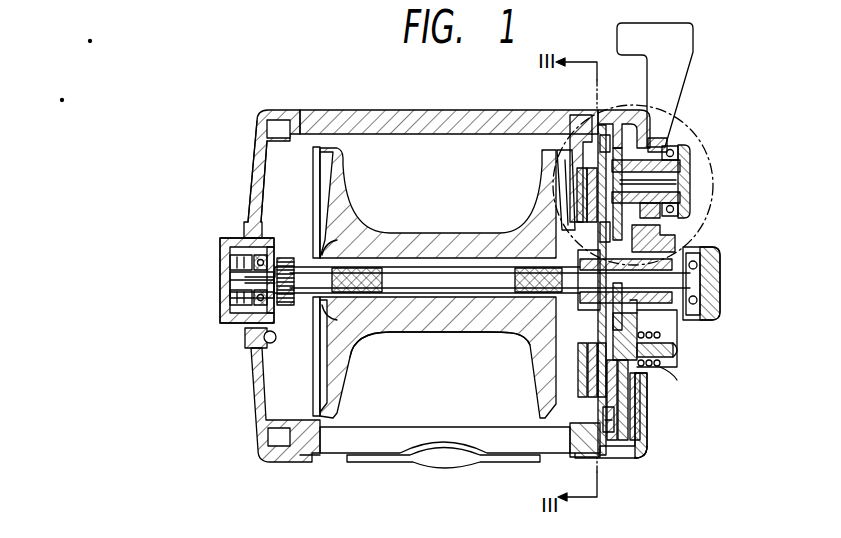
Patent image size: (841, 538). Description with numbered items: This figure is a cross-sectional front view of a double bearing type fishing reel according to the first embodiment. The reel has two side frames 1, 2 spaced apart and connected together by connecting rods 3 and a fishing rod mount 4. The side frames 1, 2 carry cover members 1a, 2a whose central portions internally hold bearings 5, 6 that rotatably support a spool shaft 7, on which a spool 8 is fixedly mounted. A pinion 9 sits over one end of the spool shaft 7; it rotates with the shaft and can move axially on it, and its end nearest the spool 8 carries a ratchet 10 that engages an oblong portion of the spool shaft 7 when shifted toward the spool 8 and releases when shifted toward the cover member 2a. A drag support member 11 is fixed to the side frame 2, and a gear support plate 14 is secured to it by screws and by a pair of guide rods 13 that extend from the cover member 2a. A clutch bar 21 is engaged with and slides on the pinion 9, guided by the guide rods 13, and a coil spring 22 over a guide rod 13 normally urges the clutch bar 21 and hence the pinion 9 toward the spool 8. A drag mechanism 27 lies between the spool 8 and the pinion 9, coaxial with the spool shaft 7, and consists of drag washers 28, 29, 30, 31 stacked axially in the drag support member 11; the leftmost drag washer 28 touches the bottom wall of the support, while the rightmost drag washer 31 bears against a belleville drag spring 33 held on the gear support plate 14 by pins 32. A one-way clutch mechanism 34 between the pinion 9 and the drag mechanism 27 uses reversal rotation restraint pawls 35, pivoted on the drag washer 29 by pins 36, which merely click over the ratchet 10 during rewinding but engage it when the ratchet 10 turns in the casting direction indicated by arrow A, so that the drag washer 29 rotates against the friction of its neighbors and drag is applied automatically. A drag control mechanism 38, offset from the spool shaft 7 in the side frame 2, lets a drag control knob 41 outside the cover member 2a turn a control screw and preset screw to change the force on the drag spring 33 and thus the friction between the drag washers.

The side frame 1 is at (252, 132).
The cover member 1a is at (258, 181).
The side frame 2 is at (634, 462).
The cover member 2a is at (640, 462).
The connecting rods 3 is at (343, 117).
The fishing rod mount 4 is at (366, 457).
The bearing 5 is at (270, 270).
The bearing 6 is at (720, 268).
The spool shaft 7 is at (422, 268).
The spool 8 is at (393, 240).
The pinion 9 is at (693, 233).
The ratchet 10 is at (580, 253).
The drag support member 11 is at (583, 163).
The guide rods 13 is at (636, 365).
The gear support plate 14 is at (641, 418).
The clutch bar 21 is at (633, 313).
The coil spring 22 is at (664, 373).
The drag mechanism 27 is at (573, 183).
The drag washer 28 is at (583, 360).
The drag washer 29 is at (591, 383).
The drag washer 30 is at (603, 397).
The drag washer 31 is at (597, 418).
The pins 32 is at (610, 136).
The drag spring 33 is at (610, 428).
The one-way clutch mechanism 34 is at (560, 323).
The reversal rotation restraint pawls 35 is at (639, 322).
The pins 36 is at (674, 353).
The drag control mechanism 38 is at (696, 167).
The drag control knob 41 is at (683, 50).
The arrow A is at (699, 130).